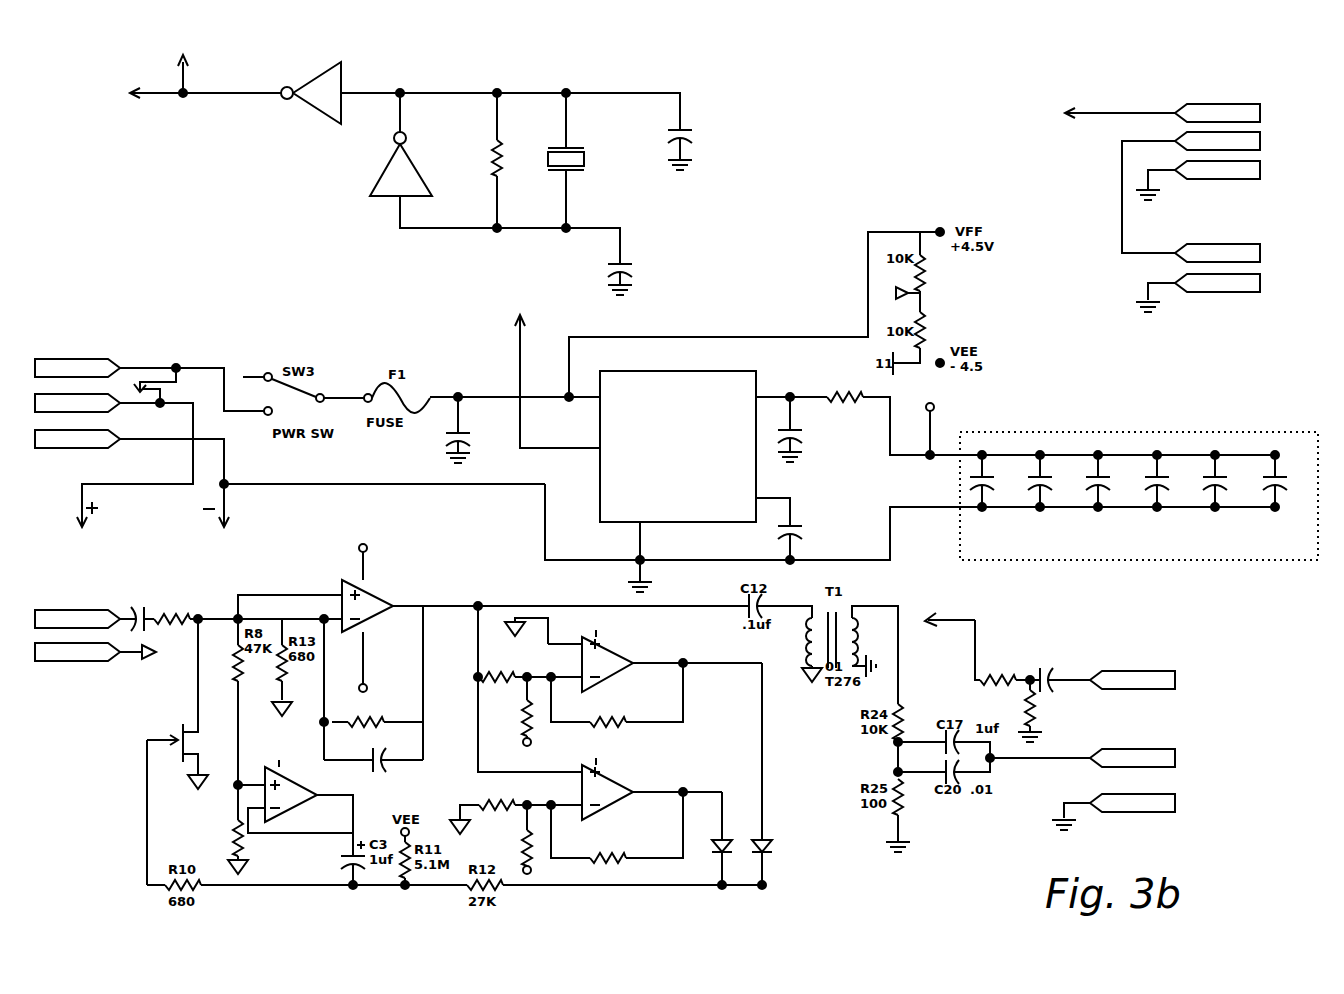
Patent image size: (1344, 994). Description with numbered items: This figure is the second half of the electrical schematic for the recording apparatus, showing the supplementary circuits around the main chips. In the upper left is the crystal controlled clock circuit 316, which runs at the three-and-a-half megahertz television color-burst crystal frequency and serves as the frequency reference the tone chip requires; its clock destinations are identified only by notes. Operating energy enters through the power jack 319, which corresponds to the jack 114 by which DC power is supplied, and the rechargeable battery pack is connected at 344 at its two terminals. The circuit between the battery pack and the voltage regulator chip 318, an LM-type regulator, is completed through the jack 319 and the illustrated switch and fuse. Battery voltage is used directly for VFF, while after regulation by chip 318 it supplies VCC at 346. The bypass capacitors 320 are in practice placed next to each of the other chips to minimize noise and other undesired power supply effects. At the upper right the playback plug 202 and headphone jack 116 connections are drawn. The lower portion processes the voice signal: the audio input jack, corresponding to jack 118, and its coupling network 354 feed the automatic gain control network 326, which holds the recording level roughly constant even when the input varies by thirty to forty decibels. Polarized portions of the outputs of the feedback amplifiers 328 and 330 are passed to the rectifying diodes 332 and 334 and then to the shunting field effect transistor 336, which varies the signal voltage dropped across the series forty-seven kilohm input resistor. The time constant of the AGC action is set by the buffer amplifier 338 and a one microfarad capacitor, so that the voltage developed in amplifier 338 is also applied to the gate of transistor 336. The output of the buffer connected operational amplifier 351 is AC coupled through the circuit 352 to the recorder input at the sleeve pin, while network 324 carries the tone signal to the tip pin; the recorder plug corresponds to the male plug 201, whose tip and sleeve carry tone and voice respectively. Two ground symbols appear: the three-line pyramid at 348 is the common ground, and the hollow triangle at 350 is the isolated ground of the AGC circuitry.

The crystal controlled clock circuit 316 is at (494, 79).
The voltage regulator chip 318 is at (710, 371).
The power jack 319 is at (217, 397).
The bypass capacitors 320 is at (1155, 434).
The circuit network 324 is at (1102, 637).
The automatic gain control network 326 is at (482, 584).
The feedback amplifier 328 is at (627, 652).
The feedback amplifier 330 is at (627, 782).
The rectifying diode 332 is at (755, 850).
The rectifying diode 334 is at (712, 850).
The shunting field effect transistor 336 is at (175, 737).
The buffer amplifier 338 is at (290, 768).
The battery pack connection 344 is at (162, 512).
The VCC supply point 346 is at (940, 410).
The common ground symbol 348 is at (1060, 821).
The isolated ground symbol 350 is at (246, 866).
The buffer connected operational amplifier 351 is at (348, 562).
The coupling circuit 352 is at (968, 672).
The coupling network 354 is at (130, 584).
The power jack 114 is at (94, 386).
The output signal jack 116 is at (1202, 262).
The input signal jack 118 is at (101, 654).
The male plug 201 is at (1202, 741).
The playback plug 202 is at (1162, 160).